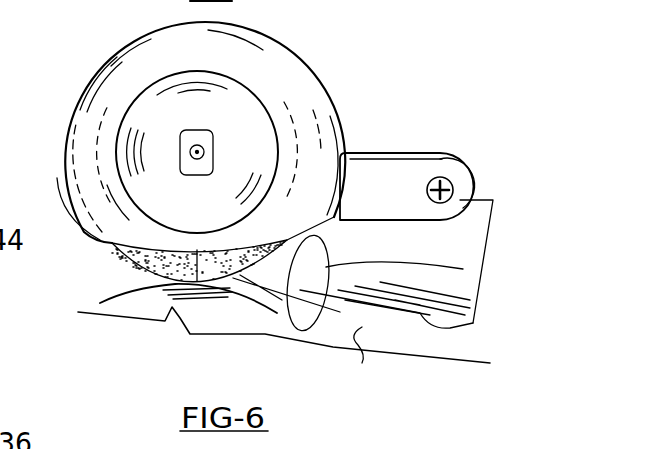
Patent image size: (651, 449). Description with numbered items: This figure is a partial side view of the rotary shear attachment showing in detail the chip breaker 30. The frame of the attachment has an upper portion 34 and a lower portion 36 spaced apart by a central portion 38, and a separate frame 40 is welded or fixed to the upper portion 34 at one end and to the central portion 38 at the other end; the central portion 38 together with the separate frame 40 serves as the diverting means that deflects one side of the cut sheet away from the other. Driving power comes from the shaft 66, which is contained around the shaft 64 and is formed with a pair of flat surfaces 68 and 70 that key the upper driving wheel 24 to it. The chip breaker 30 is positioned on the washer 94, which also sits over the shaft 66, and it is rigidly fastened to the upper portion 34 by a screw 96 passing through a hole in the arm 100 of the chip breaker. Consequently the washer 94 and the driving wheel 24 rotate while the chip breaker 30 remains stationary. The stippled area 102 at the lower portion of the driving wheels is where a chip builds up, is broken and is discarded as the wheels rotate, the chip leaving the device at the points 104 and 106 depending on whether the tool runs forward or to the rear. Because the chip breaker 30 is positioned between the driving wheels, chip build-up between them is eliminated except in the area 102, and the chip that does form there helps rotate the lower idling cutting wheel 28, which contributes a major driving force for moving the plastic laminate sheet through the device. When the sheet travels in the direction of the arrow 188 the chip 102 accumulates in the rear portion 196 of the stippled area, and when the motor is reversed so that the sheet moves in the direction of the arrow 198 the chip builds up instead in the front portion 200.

The driving wheel 24 is at (120, 263).
The lower idling cutting wheel 28 is at (133, 300).
The chip breaker 30 is at (321, 103).
The upper portion 34 is at (416, 258).
The lower portion 36 is at (473, 323).
The central portion 38 is at (460, 327).
The separate frame 40 is at (466, 270).
The shaft 64 is at (213, 130).
The shaft 66 is at (214, 140).
The flat surface 68 is at (214, 158).
The flat surface 70 is at (190, 128).
The washer 94 is at (378, 136).
The screw 96 is at (452, 200).
The arm 100 is at (413, 187).
The chip build-up area 102 is at (198, 226).
The discharge point 104 is at (62, 148).
The discharge point 106 is at (318, 332).
The arrow 188 is at (80, 312).
The rear portion 196 is at (238, 337).
The arrow 198 is at (128, 292).
The front portion 200 is at (207, 216).